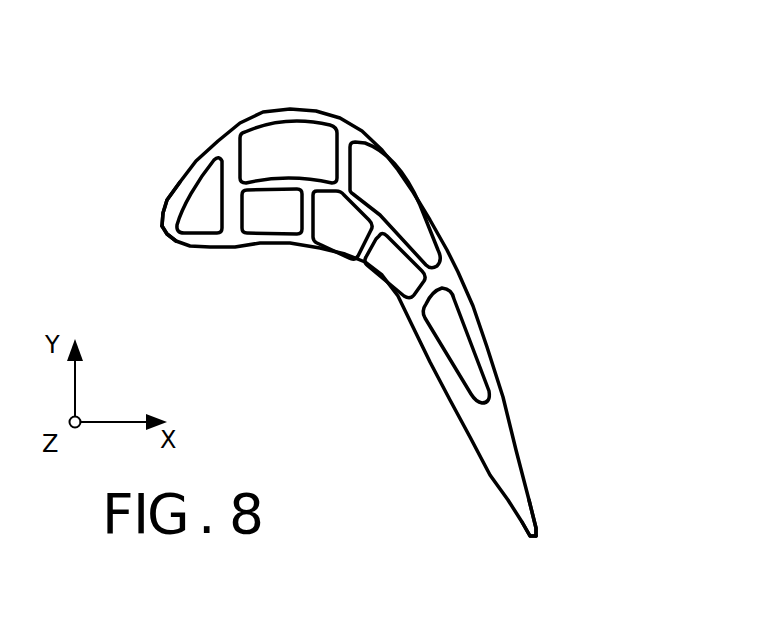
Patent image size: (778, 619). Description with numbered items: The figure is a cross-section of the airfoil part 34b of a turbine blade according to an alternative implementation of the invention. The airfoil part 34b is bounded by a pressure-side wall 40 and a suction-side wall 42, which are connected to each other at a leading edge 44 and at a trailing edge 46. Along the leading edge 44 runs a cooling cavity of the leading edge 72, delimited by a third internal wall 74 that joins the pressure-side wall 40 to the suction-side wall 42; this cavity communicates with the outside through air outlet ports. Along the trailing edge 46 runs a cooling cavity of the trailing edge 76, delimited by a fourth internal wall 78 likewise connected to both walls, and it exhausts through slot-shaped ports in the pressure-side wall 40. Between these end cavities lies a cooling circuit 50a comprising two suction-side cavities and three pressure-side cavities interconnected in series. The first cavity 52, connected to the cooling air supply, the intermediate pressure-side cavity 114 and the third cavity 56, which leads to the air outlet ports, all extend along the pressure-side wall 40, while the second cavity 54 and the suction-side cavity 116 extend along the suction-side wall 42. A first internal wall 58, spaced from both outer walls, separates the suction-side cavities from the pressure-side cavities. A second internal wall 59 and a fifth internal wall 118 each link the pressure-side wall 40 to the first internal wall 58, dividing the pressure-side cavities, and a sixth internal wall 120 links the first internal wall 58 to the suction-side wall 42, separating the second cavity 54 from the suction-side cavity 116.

The airfoil part 34b is at (610, 242).
The pressure-side wall 40 is at (452, 392).
The suction-side wall 42 is at (392, 168).
The leading edge 44 is at (162, 227).
The trailing edge 46 is at (535, 538).
The cooling circuit 50a is at (358, 441).
The first cavity 52 is at (265, 218).
The second cavity 54 is at (292, 167).
The third cavity 56 is at (393, 275).
The first internal wall 58 is at (394, 237).
The second internal wall 59 is at (308, 242).
The cooling cavity of the leading edge 72 is at (198, 202).
The third internal wall 74 is at (235, 211).
The cooling cavity of the trailing edge 76 is at (467, 349).
The fourth internal wall 78 is at (423, 305).
The intermediate pressure-side cavity 114 is at (334, 231).
The suction-side cavity 116 is at (372, 193).
The fifth internal wall 118 is at (366, 251).
The sixth internal wall 120 is at (344, 164).